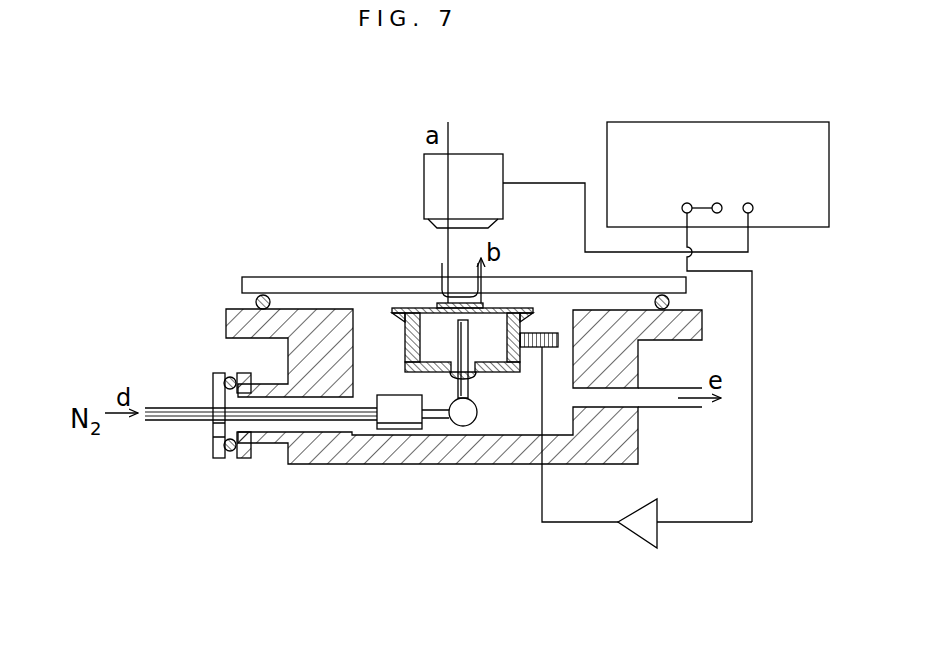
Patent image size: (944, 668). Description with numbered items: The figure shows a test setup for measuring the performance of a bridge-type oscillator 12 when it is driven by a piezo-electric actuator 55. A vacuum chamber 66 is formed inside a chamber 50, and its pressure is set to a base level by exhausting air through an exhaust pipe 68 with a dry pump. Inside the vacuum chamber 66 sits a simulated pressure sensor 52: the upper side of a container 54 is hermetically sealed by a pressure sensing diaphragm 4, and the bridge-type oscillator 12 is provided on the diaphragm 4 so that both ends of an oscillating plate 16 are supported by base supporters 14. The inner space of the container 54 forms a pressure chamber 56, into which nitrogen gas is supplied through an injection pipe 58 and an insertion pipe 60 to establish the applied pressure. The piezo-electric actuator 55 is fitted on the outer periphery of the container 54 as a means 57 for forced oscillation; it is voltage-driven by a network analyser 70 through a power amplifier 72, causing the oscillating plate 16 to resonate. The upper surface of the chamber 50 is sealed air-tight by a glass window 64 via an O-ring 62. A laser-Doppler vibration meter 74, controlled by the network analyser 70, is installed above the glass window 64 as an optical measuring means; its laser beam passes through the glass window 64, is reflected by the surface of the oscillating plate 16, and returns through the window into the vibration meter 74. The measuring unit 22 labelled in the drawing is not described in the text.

The pressure sensing diaphragm 4 is at (438, 299).
The bridge-type oscillator 12 is at (443, 328).
The base supporters 14 is at (462, 349).
The oscillating plate 16 is at (483, 303).
The detection unit 22 is at (517, 166).
The chamber 50 is at (408, 450).
The simulated pressure sensor 52 is at (404, 348).
The container 54 is at (493, 372).
The piezo-electric actuator 55 is at (547, 333).
The pressure chamber 56 is at (518, 372).
The means for forced oscillation 57 is at (534, 356).
The injection pipe 58 is at (447, 420).
The insertion pipe 60 is at (313, 420).
The O-ring 62 is at (262, 295).
The glass window 64 is at (312, 291).
The vacuum chamber 66 is at (558, 415).
The exhaust pipe 68 is at (667, 408).
The network analyser 70 is at (718, 138).
The power amplifier 72 is at (640, 537).
The laser-Doppler vibration meter 74 is at (485, 167).